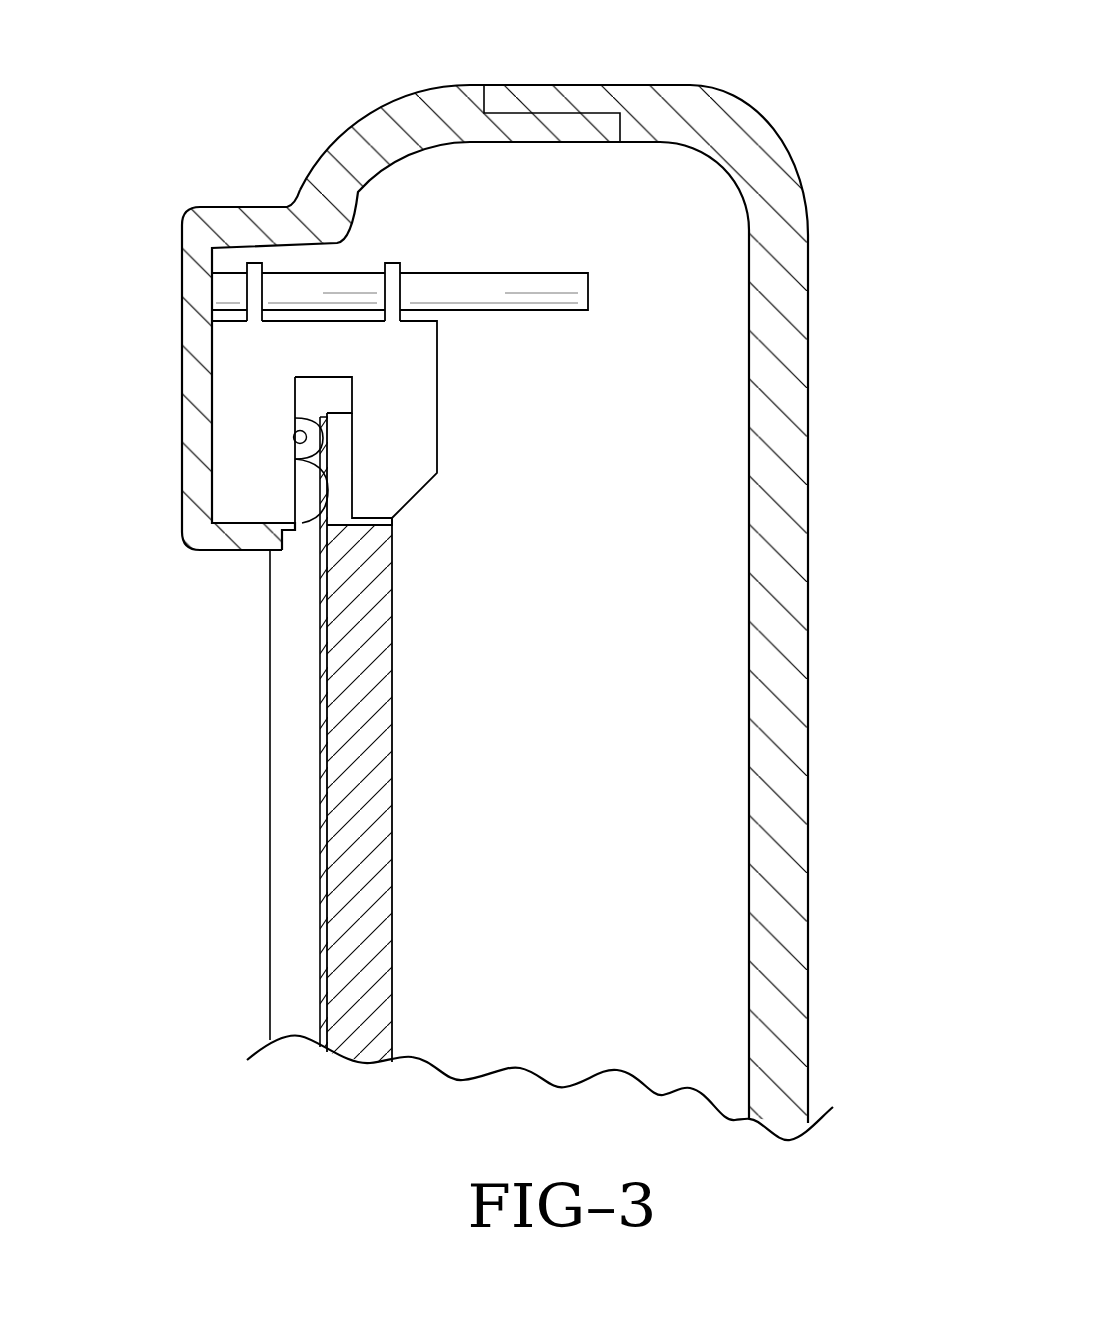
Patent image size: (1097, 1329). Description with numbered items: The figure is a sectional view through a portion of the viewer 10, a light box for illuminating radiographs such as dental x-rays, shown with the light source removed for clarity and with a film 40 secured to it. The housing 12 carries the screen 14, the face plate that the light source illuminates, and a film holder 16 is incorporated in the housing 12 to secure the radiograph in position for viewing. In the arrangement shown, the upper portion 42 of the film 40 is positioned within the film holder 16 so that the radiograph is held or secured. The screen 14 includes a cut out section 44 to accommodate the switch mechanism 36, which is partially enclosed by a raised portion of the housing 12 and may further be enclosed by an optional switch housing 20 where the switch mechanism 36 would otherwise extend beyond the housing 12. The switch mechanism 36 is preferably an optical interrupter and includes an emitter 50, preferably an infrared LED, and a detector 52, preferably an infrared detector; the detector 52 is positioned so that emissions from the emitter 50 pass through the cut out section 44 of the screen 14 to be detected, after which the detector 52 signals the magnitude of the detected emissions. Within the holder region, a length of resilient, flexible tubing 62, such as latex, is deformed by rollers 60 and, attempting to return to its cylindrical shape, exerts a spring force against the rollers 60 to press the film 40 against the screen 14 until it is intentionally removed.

The viewer 10 is at (488, 570).
The housing 12 is at (770, 520).
The screen 14 is at (390, 768).
The holder 16 is at (158, 418).
The switch housing 20 is at (217, 207).
The switch mechanism 36 is at (425, 517).
The film 40 is at (318, 717).
The upper portion 42 is at (318, 417).
The cut out section 44 is at (335, 388).
The emitter 50 is at (383, 465).
The detector 52 is at (250, 467).
The rollers 60 is at (302, 505).
The tubing 62 is at (307, 420).